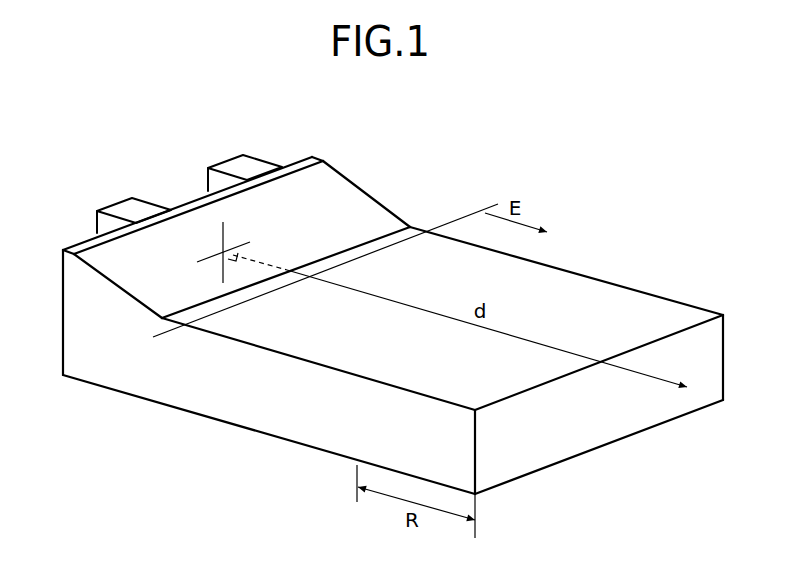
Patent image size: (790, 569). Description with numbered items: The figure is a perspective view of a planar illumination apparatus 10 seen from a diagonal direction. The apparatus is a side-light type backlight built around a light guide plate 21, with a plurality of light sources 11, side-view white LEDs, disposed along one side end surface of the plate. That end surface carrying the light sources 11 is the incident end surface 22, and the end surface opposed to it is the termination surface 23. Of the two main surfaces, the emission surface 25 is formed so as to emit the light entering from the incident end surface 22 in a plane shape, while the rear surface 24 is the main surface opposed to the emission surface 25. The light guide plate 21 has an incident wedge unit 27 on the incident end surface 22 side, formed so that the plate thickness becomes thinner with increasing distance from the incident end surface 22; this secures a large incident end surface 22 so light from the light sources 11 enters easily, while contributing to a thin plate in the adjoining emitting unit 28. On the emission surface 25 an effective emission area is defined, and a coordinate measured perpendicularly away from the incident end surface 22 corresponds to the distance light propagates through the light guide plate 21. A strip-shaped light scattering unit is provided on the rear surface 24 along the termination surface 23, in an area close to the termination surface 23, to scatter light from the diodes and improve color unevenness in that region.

The planar illumination apparatus 10 is at (647, 104).
The light sources 11 is at (130, 210).
The light guide plate 21 is at (666, 247).
The incident end surface 22 is at (193, 201).
The termination surface 23 is at (572, 420).
The rear surface 24 is at (288, 440).
The emission surface 25 is at (580, 297).
The incident wedge unit 27 is at (107, 330).
The emitting unit 28 is at (205, 375).